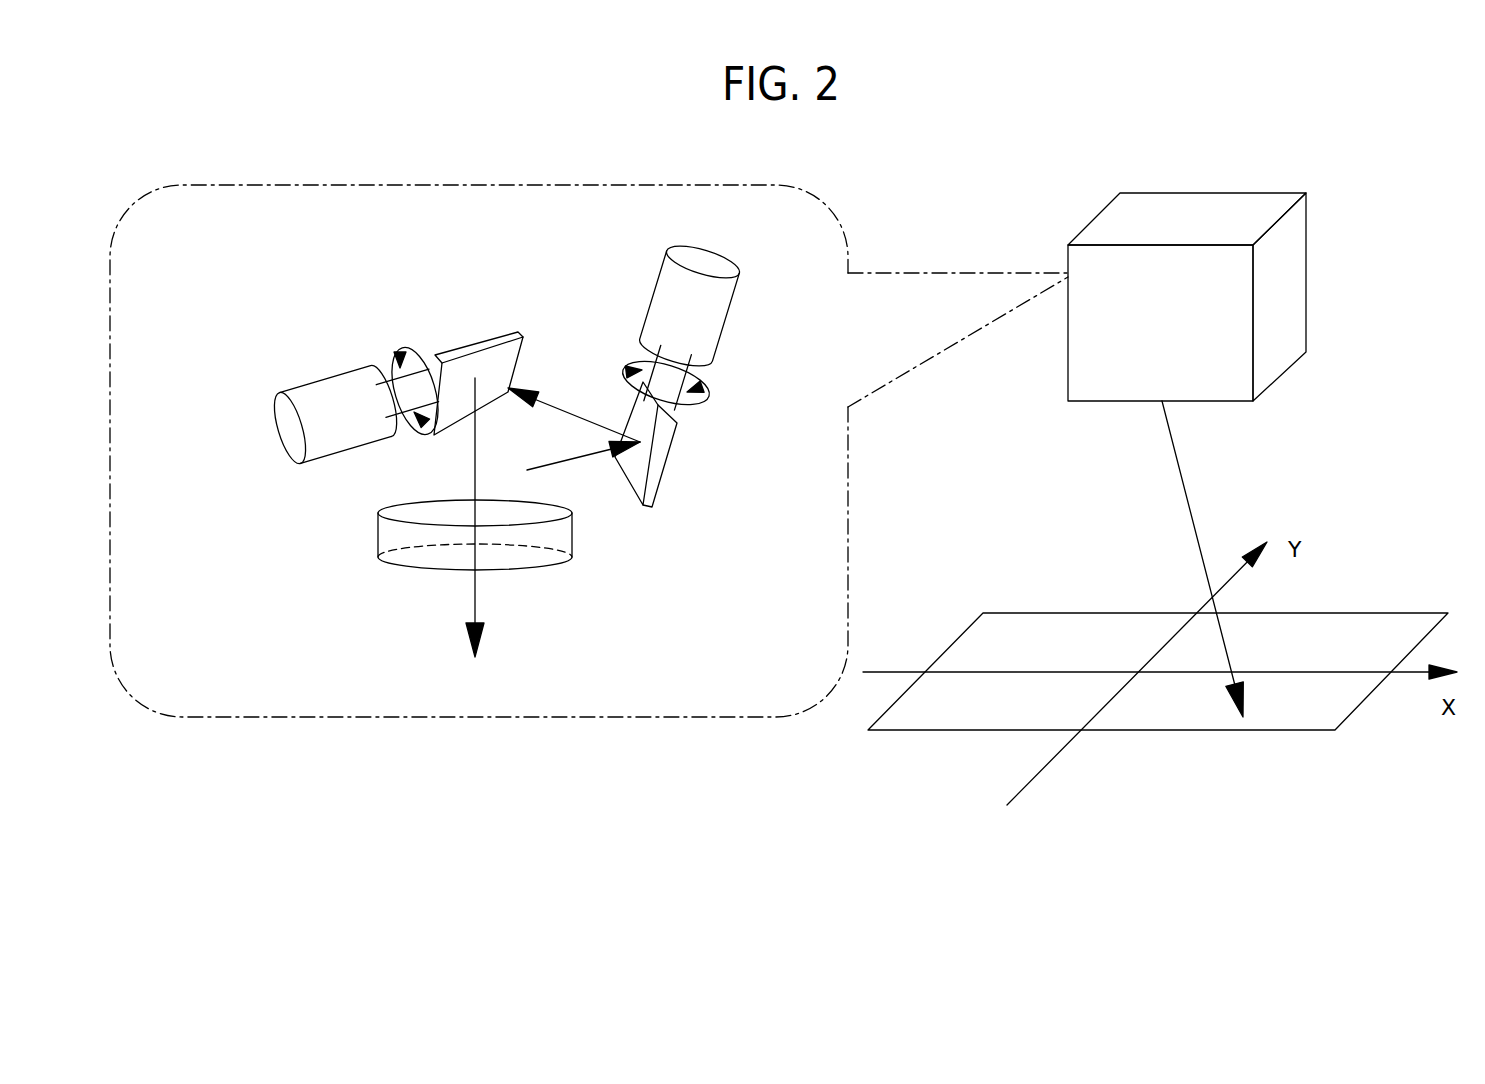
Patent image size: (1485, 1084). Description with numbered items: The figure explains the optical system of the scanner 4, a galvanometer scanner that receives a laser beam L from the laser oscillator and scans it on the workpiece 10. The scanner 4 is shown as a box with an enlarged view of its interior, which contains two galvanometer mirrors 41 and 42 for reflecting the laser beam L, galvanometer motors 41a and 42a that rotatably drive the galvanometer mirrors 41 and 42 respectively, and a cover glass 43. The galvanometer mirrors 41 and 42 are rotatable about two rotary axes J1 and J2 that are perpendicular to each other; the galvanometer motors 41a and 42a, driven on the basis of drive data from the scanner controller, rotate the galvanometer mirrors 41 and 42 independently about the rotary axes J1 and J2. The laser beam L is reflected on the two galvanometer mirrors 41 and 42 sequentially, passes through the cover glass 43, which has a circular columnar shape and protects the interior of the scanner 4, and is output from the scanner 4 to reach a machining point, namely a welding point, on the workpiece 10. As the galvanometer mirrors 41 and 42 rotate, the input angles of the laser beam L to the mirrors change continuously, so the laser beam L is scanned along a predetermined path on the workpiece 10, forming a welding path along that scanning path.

The scanner 4 is at (1300, 272).
The workpiece 10 is at (1377, 613).
The laser beam L is at (1181, 462).
The galvanometer mirror 41 is at (478, 350).
The galvanometer motor 41a is at (325, 383).
The rotary axis J1 is at (398, 370).
The galvanometer mirror 42 is at (672, 458).
The galvanometer motor 42a is at (747, 318).
The rotary axis J2 is at (692, 372).
The cover glass 43 is at (375, 535).